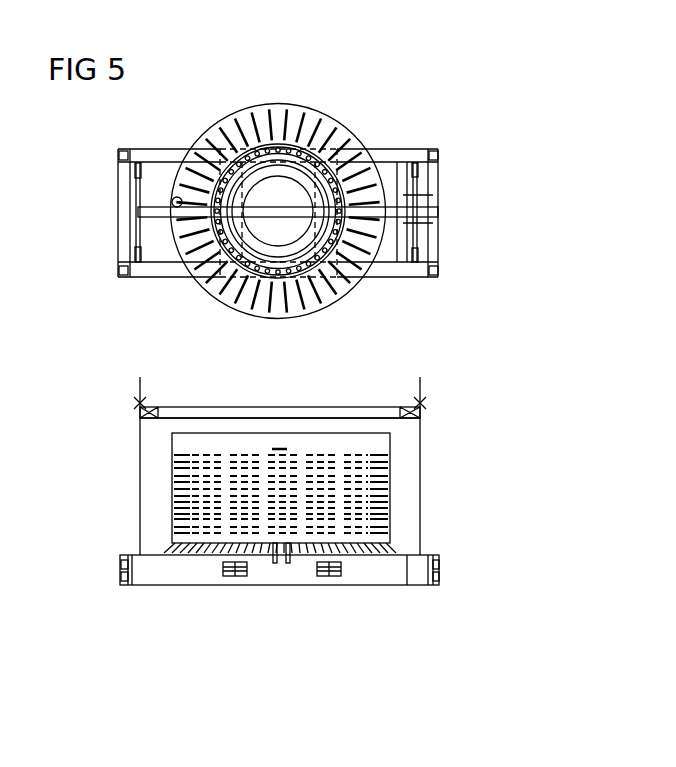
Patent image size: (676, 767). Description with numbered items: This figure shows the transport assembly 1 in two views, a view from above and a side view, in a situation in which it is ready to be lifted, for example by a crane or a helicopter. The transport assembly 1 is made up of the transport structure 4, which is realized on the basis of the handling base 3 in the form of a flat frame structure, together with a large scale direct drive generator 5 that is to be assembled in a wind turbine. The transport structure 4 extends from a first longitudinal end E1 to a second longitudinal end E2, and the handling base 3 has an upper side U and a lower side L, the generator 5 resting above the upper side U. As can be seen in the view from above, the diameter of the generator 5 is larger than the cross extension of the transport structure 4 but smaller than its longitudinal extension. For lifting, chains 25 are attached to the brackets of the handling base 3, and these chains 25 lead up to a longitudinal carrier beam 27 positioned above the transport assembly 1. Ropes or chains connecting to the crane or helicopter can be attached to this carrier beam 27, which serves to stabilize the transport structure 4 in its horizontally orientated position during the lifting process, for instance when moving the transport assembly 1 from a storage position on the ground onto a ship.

The transport assembly 1 is at (281, 362).
The handling base 3 is at (278, 397).
The transport structure 4 is at (397, 275).
The direct drive generator 5 is at (270, 312).
The chains 25 is at (422, 458).
The carrier beam 27 is at (322, 410).
The first longitudinal end E1 is at (438, 212).
The second longitudinal end E2 is at (82, 580).
The upper side U is at (440, 541).
The lower side L is at (227, 601).